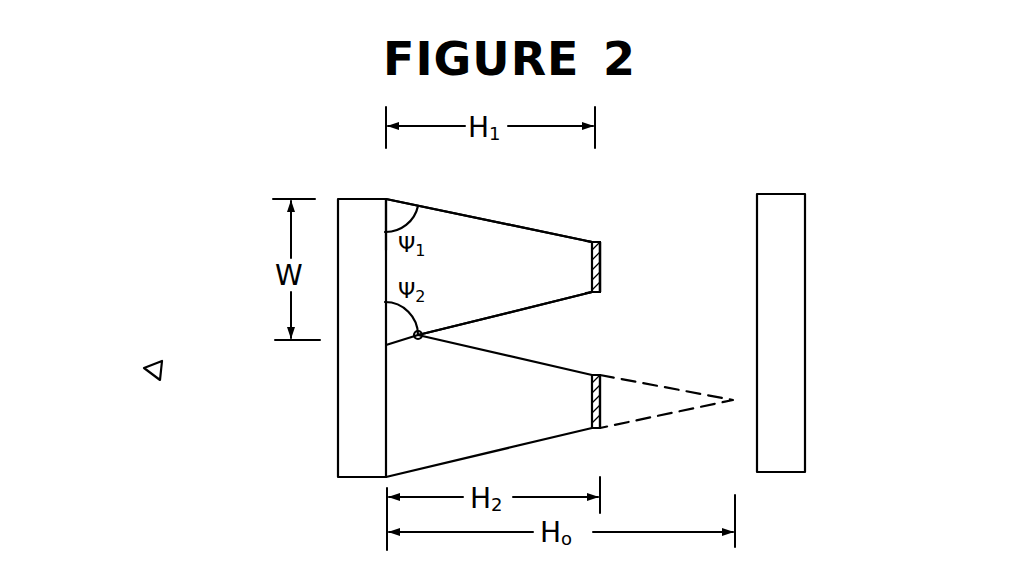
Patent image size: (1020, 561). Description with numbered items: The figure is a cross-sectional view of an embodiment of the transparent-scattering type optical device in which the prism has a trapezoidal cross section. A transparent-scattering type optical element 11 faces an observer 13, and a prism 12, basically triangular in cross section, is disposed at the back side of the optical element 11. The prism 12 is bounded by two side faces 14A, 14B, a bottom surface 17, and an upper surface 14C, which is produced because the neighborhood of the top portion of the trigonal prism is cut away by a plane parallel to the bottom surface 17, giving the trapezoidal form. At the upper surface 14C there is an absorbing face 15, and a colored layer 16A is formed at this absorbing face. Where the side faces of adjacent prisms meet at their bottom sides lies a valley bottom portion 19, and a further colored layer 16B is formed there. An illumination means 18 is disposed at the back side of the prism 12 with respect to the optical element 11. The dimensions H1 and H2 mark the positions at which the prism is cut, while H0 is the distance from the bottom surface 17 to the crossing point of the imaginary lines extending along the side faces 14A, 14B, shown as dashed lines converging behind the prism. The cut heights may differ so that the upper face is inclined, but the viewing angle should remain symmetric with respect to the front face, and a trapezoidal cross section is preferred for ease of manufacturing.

The transparent-scattering type optical element 11 is at (322, 441).
The prism 12 is at (497, 214).
The observer 13 is at (155, 379).
The side face of the prism 14A is at (441, 211).
The side face of the prism 14B is at (558, 300).
The upper surface of the prism 14C is at (662, 362).
The absorbing face 15 is at (592, 262).
The colored layer 16A is at (602, 265).
The colored layer 16B is at (424, 336).
The bottom surface of the prism 17 is at (385, 240).
The illumination means 18 is at (783, 452).
The valley bottom portion 19 is at (416, 338).